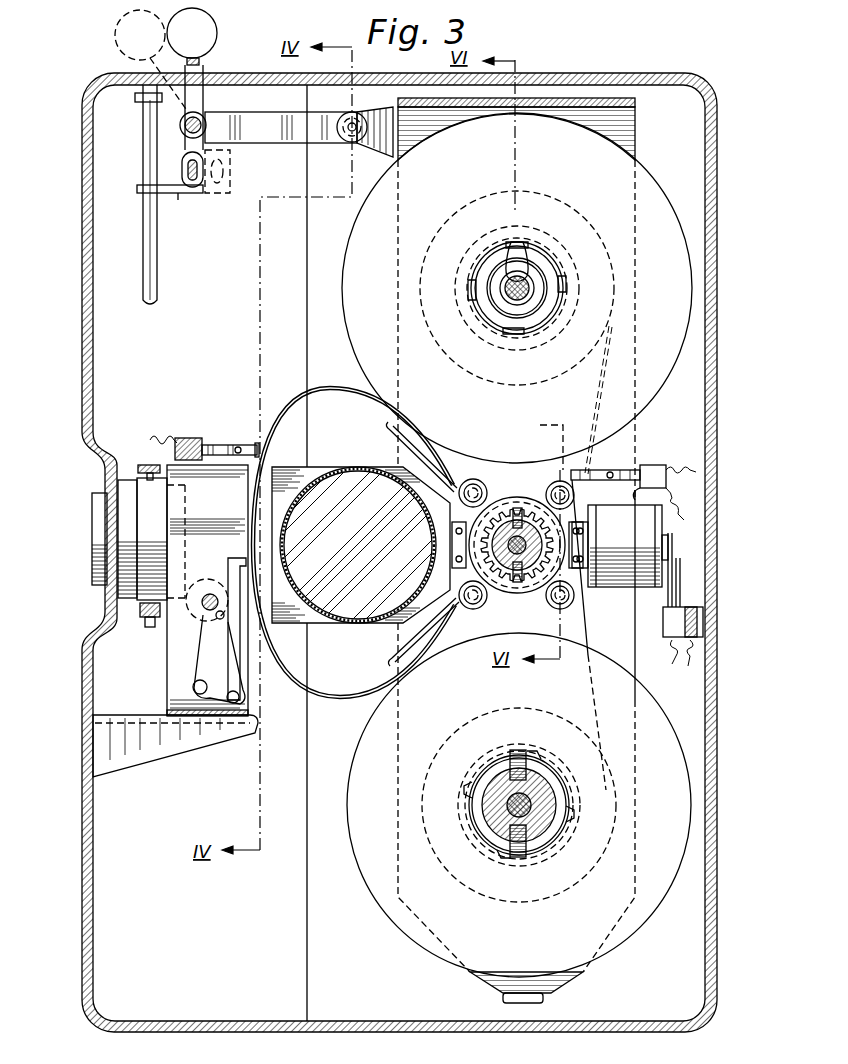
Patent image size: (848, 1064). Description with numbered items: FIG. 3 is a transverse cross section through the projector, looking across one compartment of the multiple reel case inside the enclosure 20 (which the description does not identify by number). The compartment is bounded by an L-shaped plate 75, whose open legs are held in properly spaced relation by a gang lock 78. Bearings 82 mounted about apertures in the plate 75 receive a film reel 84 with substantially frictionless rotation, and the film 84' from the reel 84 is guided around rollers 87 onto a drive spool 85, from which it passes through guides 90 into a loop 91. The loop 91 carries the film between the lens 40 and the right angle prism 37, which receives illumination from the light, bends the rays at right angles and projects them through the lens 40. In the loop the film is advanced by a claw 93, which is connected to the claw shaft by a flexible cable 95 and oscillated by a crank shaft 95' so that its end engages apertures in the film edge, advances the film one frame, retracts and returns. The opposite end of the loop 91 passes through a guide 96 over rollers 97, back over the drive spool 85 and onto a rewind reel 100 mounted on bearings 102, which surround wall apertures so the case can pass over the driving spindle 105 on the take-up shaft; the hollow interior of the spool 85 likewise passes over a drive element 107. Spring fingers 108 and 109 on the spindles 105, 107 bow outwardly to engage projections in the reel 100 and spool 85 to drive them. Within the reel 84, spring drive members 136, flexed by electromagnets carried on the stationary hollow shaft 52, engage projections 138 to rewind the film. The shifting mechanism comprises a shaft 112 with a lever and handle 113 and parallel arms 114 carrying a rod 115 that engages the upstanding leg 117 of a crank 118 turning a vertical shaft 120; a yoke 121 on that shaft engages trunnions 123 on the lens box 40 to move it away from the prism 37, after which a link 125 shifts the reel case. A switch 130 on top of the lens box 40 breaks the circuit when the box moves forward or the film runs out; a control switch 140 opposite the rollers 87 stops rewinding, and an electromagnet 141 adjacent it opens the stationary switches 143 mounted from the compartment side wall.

The housing 20 is at (588, 82).
The right angle prism 37 is at (359, 484).
The lens box 40 is at (122, 503).
The stationary hollow shaft 52 is at (530, 292).
The L-shaped plate 75 is at (636, 126).
The gang lock 78 is at (535, 1002).
The bearings 82 is at (493, 219).
The film reel 84 is at (517, 288).
The film 84' is at (581, 558).
The drive spool 85 is at (506, 500).
The rollers 87 is at (468, 480).
The guides 90 is at (424, 440).
The loop 91 is at (336, 392).
The claw 93 is at (232, 572).
The flexible cable 95 is at (207, 587).
The crank shaft 95' is at (211, 634).
The guide 96 is at (415, 652).
The rollers 97 is at (467, 607).
The rewind reel 100 is at (519, 805).
The bearings 102 is at (521, 733).
The driving spindle 105 is at (540, 830).
The drive element 107 is at (506, 575).
The spring fingers 108 is at (528, 853).
The spring fingers 109 is at (518, 585).
The shaft 112 is at (205, 114).
The lever and handle 113 is at (217, 34).
The parallel arms 114 is at (184, 145).
The rod 115 is at (199, 190).
The upstanding leg 117 is at (180, 168).
The crank 118 is at (176, 195).
The vertical shaft 120 is at (158, 274).
The yoke 121 is at (148, 466).
The trunnions 123 is at (150, 628).
The link 125 is at (260, 114).
The switch 130 is at (195, 438).
The spring drive members 136 is at (528, 270).
The projections 138 is at (546, 243).
The control switch 140 is at (640, 466).
The electromagnet 141 is at (620, 546).
The switches 143 is at (673, 550).